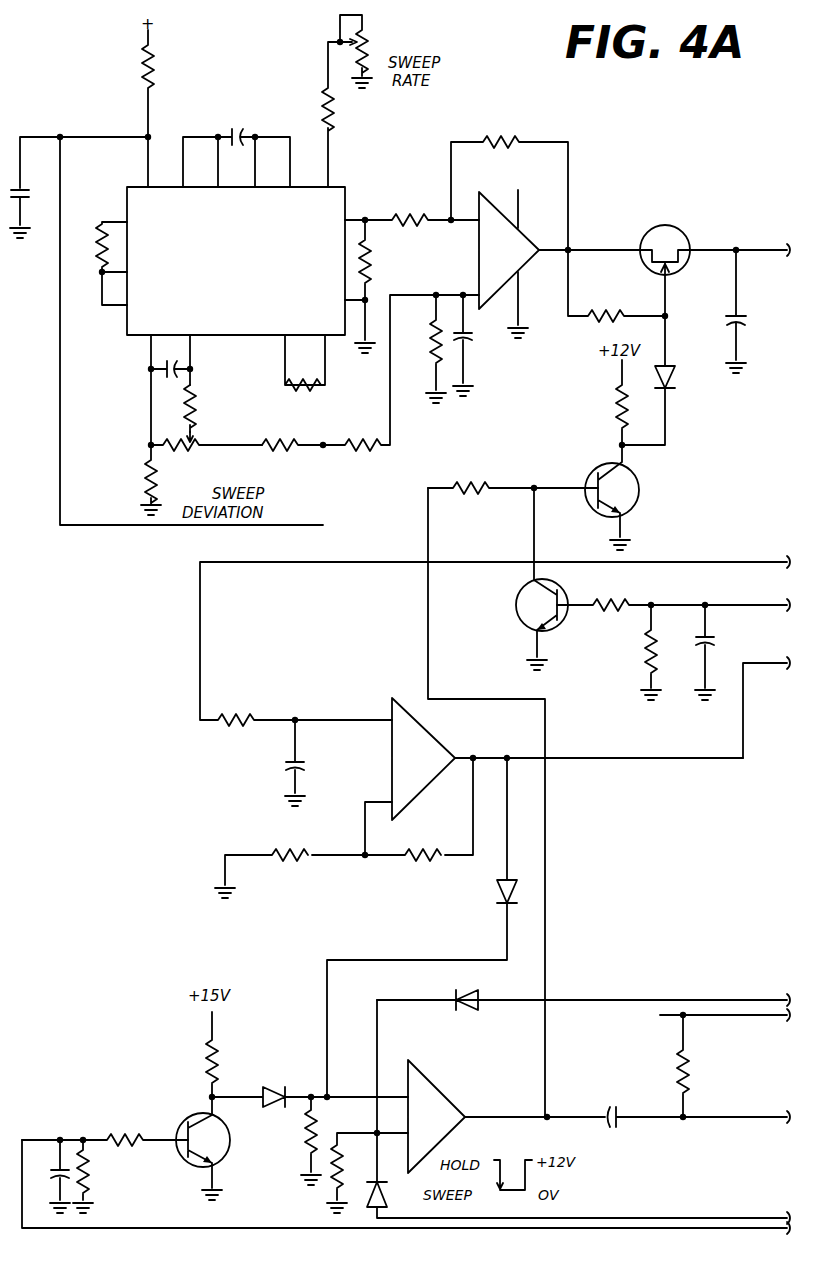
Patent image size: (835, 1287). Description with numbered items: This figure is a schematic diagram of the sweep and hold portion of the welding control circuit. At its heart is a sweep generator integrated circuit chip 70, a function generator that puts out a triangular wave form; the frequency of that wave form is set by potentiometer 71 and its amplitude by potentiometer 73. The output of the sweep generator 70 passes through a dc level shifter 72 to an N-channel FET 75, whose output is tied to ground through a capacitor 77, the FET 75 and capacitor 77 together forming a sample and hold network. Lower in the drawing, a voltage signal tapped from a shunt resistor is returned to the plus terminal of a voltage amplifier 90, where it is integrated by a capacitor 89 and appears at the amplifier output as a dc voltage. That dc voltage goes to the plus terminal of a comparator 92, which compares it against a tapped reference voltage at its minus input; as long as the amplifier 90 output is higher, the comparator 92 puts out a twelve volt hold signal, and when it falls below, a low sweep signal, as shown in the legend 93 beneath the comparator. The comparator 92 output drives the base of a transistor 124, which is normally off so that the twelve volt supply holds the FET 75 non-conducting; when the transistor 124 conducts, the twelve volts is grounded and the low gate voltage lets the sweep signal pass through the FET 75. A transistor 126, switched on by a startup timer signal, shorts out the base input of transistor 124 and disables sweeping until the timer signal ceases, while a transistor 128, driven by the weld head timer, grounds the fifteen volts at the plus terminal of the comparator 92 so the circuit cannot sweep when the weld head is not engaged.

The sweep generator integrated circuit chip 70 is at (243, 280).
The potentiometer 71 is at (378, 42).
The dc level shifter 72 is at (503, 282).
The potentiometer 73 is at (200, 460).
The N-channel FET 75 is at (668, 228).
The capacitor 77 is at (730, 322).
The capacitor 89 is at (288, 760).
The voltage amplifier 90 is at (392, 700).
The comparator 92 is at (450, 1102).
The legend 93 is at (627, 1098).
The transistor 124 is at (605, 465).
The transistor 126 is at (560, 591).
The transistor 128 is at (196, 1117).